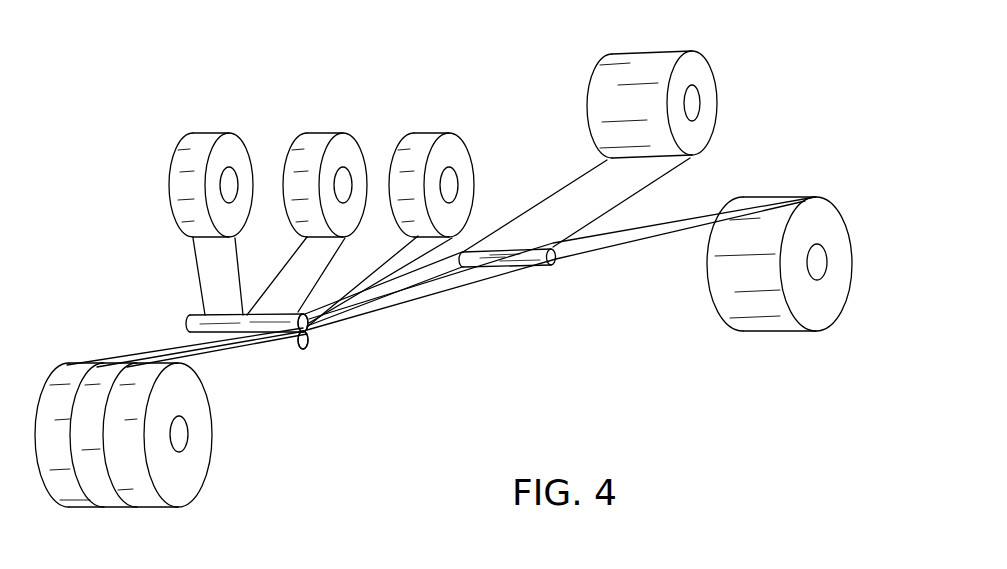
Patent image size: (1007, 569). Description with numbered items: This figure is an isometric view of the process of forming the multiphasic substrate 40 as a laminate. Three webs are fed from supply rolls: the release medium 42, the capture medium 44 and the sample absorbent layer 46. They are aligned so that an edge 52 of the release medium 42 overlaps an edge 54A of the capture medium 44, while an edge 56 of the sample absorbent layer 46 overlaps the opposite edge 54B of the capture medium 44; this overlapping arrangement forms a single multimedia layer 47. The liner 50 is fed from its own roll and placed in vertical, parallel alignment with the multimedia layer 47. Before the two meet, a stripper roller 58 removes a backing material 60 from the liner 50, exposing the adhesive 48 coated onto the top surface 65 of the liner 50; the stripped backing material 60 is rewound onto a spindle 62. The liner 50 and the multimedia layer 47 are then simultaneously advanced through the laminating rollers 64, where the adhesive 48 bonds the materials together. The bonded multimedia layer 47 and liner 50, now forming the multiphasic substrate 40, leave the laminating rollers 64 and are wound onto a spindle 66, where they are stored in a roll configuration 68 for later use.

The multiphasic substrate 40 is at (85, 344).
The release medium 42 is at (458, 142).
The capture medium 44 is at (350, 142).
The sample absorbent layer 46 is at (232, 141).
The multimedia layer 47 is at (309, 330).
The adhesive 48 is at (381, 298).
The liner 50 is at (838, 222).
The edge of the release medium 52 is at (372, 256).
The edge of the capture medium 54A is at (354, 262).
The opposite edge of the capture medium 54B is at (287, 261).
The edge of the sample absorbent layer 56 is at (262, 274).
The stripper roller 58 is at (555, 266).
The backing material 60 is at (642, 177).
The spindle 62 is at (697, 102).
The laminating rollers 64 is at (298, 346).
The top surface of the liner 65 is at (417, 285).
The spindle 66 is at (183, 433).
The roll configuration 68 is at (192, 488).